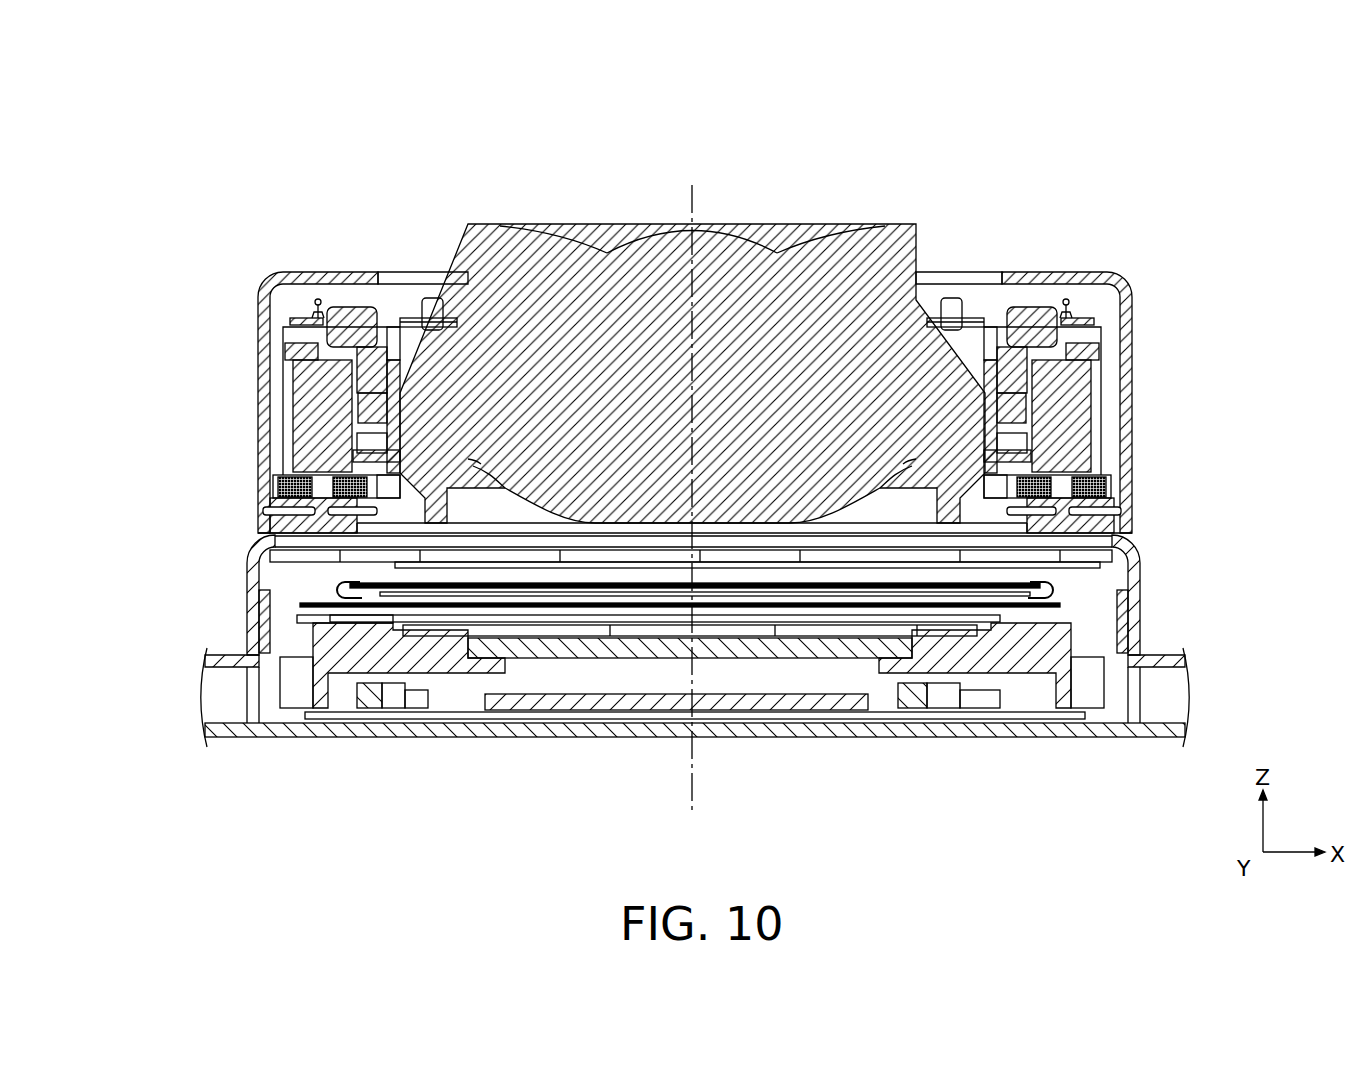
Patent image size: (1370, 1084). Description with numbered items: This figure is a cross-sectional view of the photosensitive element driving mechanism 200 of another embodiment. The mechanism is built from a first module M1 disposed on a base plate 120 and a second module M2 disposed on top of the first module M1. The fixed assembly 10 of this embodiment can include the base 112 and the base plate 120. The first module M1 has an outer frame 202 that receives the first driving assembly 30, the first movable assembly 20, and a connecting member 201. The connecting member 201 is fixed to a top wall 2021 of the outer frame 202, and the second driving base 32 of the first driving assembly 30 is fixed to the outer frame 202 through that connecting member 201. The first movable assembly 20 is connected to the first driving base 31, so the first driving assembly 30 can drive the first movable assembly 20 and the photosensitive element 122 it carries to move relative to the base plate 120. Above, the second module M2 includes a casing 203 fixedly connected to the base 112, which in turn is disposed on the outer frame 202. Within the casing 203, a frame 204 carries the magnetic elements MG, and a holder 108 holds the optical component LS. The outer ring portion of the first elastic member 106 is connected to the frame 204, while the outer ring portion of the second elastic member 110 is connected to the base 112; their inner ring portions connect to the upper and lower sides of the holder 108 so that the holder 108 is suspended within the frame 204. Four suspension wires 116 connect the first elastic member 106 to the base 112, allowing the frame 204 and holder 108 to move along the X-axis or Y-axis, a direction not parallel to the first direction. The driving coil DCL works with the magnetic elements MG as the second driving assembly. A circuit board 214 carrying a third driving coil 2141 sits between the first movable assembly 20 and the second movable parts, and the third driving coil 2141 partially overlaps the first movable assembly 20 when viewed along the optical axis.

The photosensitive element driving mechanism 200 is at (133, 85).
The fixed assembly 10 is at (1292, 115).
The second module M2 is at (1138, 384).
The first module M1 is at (1155, 625).
The casing 203 is at (1110, 276).
The optical component LS is at (910, 226).
The frame 204 is at (1112, 353).
The magnetic elements MG is at (305, 434).
The driving coil DCL is at (345, 406).
The second elastic member 110 is at (1078, 443).
The holder 108 is at (352, 310).
The first elastic member 106 is at (312, 312).
The suspension wires 116 is at (1067, 308).
The third driving coil 2141 is at (270, 490).
The circuit board 214 is at (262, 501).
The base 112 is at (1128, 507).
The outer frame 202 is at (1145, 597).
The top wall 2021 is at (1125, 549).
The connecting member 201 is at (268, 554).
The first driving assembly 30 is at (170, 578).
The second driving base 32 is at (335, 579).
The first driving base 31 is at (320, 607).
The first movable assembly 20 is at (310, 690).
The photosensitive element 122 is at (583, 711).
The base plate 120 is at (840, 737).